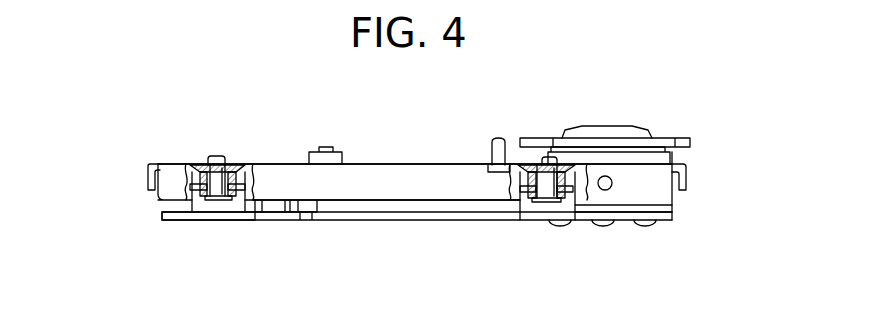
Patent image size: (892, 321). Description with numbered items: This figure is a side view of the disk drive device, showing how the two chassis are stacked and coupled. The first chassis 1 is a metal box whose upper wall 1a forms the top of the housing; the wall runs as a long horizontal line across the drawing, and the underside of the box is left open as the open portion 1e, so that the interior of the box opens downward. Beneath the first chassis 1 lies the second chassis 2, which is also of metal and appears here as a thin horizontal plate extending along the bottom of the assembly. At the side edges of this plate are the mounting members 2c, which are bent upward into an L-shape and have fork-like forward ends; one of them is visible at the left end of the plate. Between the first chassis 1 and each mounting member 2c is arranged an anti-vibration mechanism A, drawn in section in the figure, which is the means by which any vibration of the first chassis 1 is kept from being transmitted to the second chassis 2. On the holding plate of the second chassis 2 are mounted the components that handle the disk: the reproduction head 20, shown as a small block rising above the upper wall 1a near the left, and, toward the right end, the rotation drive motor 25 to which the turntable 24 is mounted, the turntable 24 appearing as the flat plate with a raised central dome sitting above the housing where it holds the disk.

The first chassis 1 is at (143, 178).
The upper wall 1a is at (420, 163).
The open portion 1e is at (485, 208).
The second chassis 2 is at (376, 221).
The mounting member 2c is at (193, 220).
The reproduction head 20 is at (328, 147).
The turntable 24 is at (682, 138).
The rotation drive motor 25 is at (690, 163).
The anti-vibration mechanism A is at (219, 203).